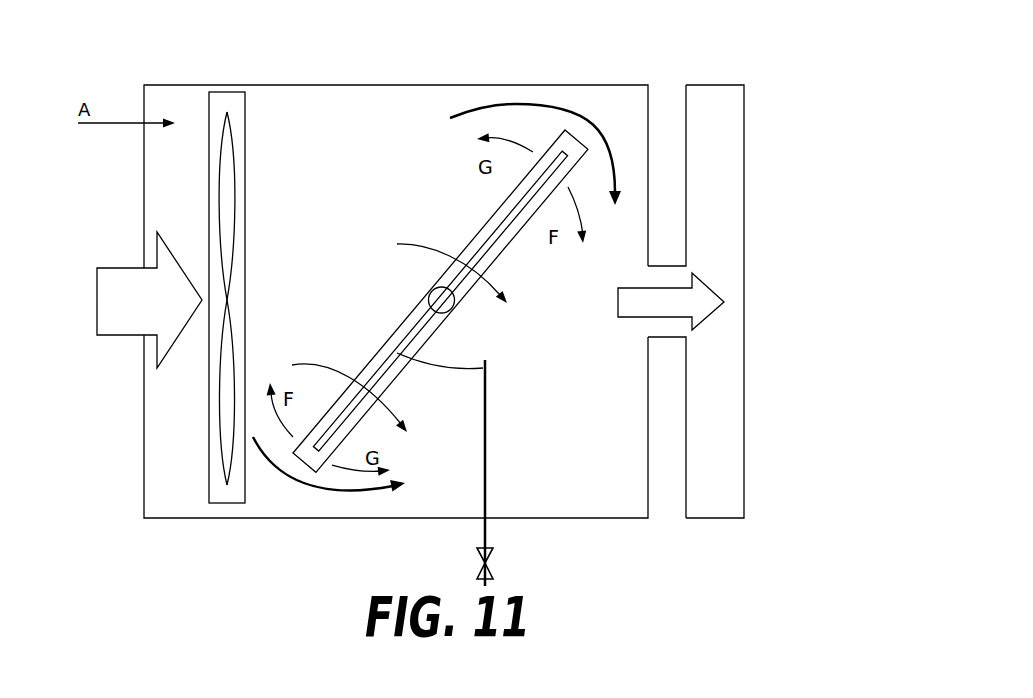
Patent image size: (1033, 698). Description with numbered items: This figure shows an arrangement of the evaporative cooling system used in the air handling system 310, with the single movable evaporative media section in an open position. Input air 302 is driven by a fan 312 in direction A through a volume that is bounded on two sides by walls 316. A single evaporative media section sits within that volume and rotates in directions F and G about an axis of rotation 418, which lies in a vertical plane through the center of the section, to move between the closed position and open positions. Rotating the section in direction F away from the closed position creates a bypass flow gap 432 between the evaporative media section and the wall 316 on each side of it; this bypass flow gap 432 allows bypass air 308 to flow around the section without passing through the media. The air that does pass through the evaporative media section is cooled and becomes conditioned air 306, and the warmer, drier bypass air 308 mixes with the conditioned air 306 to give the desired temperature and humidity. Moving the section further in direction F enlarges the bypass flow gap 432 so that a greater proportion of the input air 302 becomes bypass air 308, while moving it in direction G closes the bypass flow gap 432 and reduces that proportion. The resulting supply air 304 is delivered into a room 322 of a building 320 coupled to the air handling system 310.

The air handling system 310 is at (154, 31).
The input air 302 is at (108, 268).
The supply air 304 is at (707, 282).
The conditioned air 306 is at (423, 245).
The bypass air 308 is at (492, 104).
The fan 312 is at (227, 504).
The walls 316 is at (630, 85).
The building 320 is at (714, 85).
The room 322 is at (731, 466).
The axis of rotation 418 is at (455, 303).
The bypass flow gap 432 is at (578, 95).